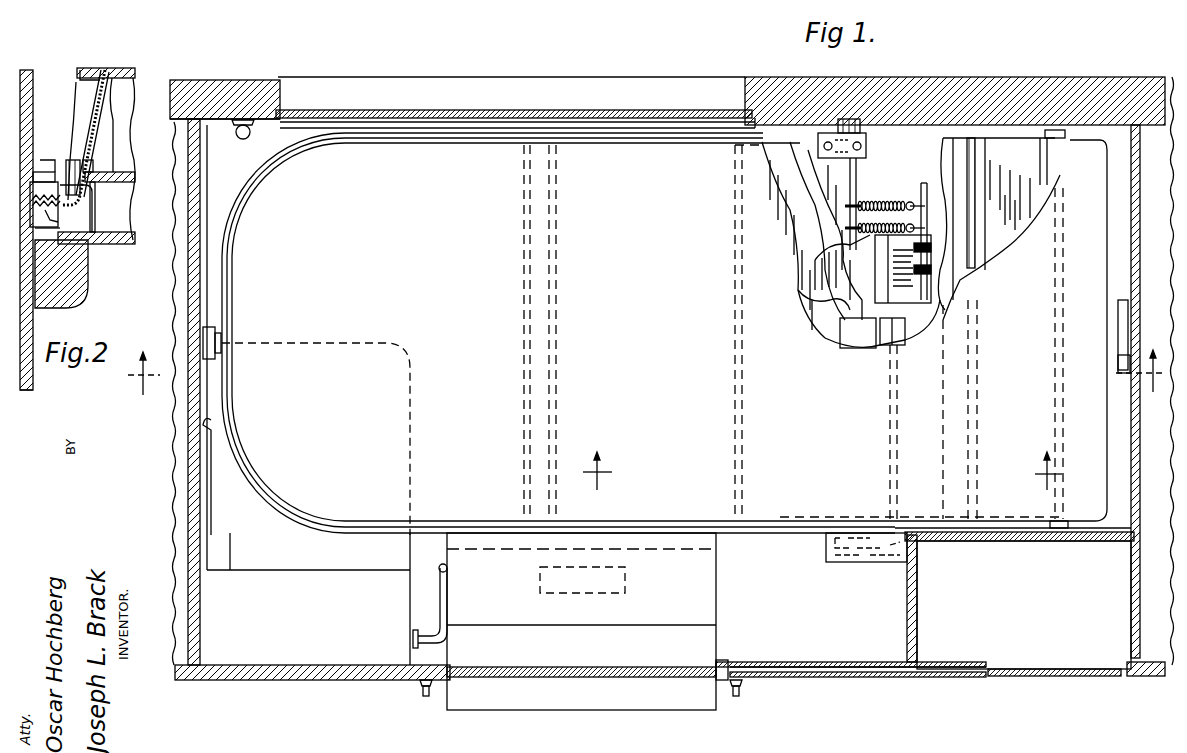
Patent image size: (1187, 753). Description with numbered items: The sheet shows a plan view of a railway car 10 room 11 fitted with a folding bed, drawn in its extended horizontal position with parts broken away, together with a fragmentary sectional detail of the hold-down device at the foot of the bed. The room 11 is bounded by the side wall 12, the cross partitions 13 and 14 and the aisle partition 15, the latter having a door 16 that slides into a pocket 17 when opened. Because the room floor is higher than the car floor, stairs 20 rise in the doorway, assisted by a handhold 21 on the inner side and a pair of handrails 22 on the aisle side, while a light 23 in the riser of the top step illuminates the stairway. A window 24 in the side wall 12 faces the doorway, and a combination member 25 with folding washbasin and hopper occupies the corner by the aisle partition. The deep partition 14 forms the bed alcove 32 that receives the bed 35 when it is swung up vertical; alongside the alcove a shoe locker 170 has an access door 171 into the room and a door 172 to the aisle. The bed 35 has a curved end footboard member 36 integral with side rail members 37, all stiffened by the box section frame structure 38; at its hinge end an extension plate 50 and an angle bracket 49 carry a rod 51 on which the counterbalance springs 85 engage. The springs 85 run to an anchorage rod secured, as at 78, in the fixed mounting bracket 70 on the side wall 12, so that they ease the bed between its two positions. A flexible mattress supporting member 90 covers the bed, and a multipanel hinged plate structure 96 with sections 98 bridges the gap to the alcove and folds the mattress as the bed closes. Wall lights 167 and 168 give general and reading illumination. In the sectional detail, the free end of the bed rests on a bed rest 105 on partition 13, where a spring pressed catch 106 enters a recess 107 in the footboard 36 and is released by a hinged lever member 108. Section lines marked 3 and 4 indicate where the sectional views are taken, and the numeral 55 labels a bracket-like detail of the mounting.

In FIG. 1, the railway car 10 is at (706, 90).
In FIG. 1, the room 11 is at (800, 647).
In FIG. 1, the side wall 12 is at (232, 118).
In FIG. 1, the cross partition 13 is at (200, 205).
In FIG. 1, the cross partition 14 is at (1128, 220).
In FIG. 1, the aisle partition 15 is at (302, 678).
In FIG. 1, the door 16 is at (608, 666).
In FIG. 1, the pocket 17 is at (858, 662).
In FIG. 1, the stairs 20 is at (655, 705).
In FIG. 1, the handhold 21 is at (448, 595).
In FIG. 1, the handholds 22 is at (420, 700).
In FIG. 1, the light 23 is at (626, 584).
In FIG. 1, the window 24 is at (498, 112).
In FIG. 1, the combination member 25 is at (308, 599).
In FIG. 1, the bed alcove 32 is at (982, 530).
In FIG. 1, the bed 35 is at (845, 255).
In FIG. 1, the end footboard member 36 is at (233, 360).
In FIG. 2, the end footboard member 36 is at (95, 70).
In FIG. 1, the side rail members 37 is at (498, 143).
In FIG. 1, the box section frame structure 38 is at (840, 312).
In FIG. 2, the box section frame structure 38 is at (103, 202).
In FIG. 1, the angle bracket 49 is at (930, 257).
In FIG. 1, the extension plate 50 is at (922, 308).
In FIG. 1, the rod 51 is at (920, 165).
In FIG. 1, the bracket 55 is at (866, 148).
In FIG. 1, the fixed mounting bracket 70 is at (866, 129).
In FIG. 1, the rod securement 78 is at (857, 176).
In FIG. 1, the counterbalance springs 85 is at (872, 205).
In FIG. 1, the mattress supporting member 90 is at (833, 275).
In FIG. 1, the multipanel hinged plate structure 96 is at (862, 340).
In FIG. 1, the hinged section 98 is at (908, 330).
In FIG. 2, the bed rest 105 is at (85, 288).
In FIG. 2, the spring pressed catch 106 is at (58, 175).
In FIG. 2, the recess 107 is at (105, 244).
In FIG. 2, the lever member 108 is at (112, 72).
In FIG. 1, the light 167 is at (240, 139).
In FIG. 2, the wall light 168 is at (95, 105).
In FIG. 1, the shoe locker 170 is at (1024, 605).
In FIG. 1, the access door 171 is at (918, 578).
In FIG. 1, the door 172 is at (1062, 668).
In FIG. 1, the section line 3- 3 is at (1141, 362).
In FIG. 2, the section line 3- 3 is at (144, 387).
In FIG. 1, the section line 4- 4 is at (822, 478).